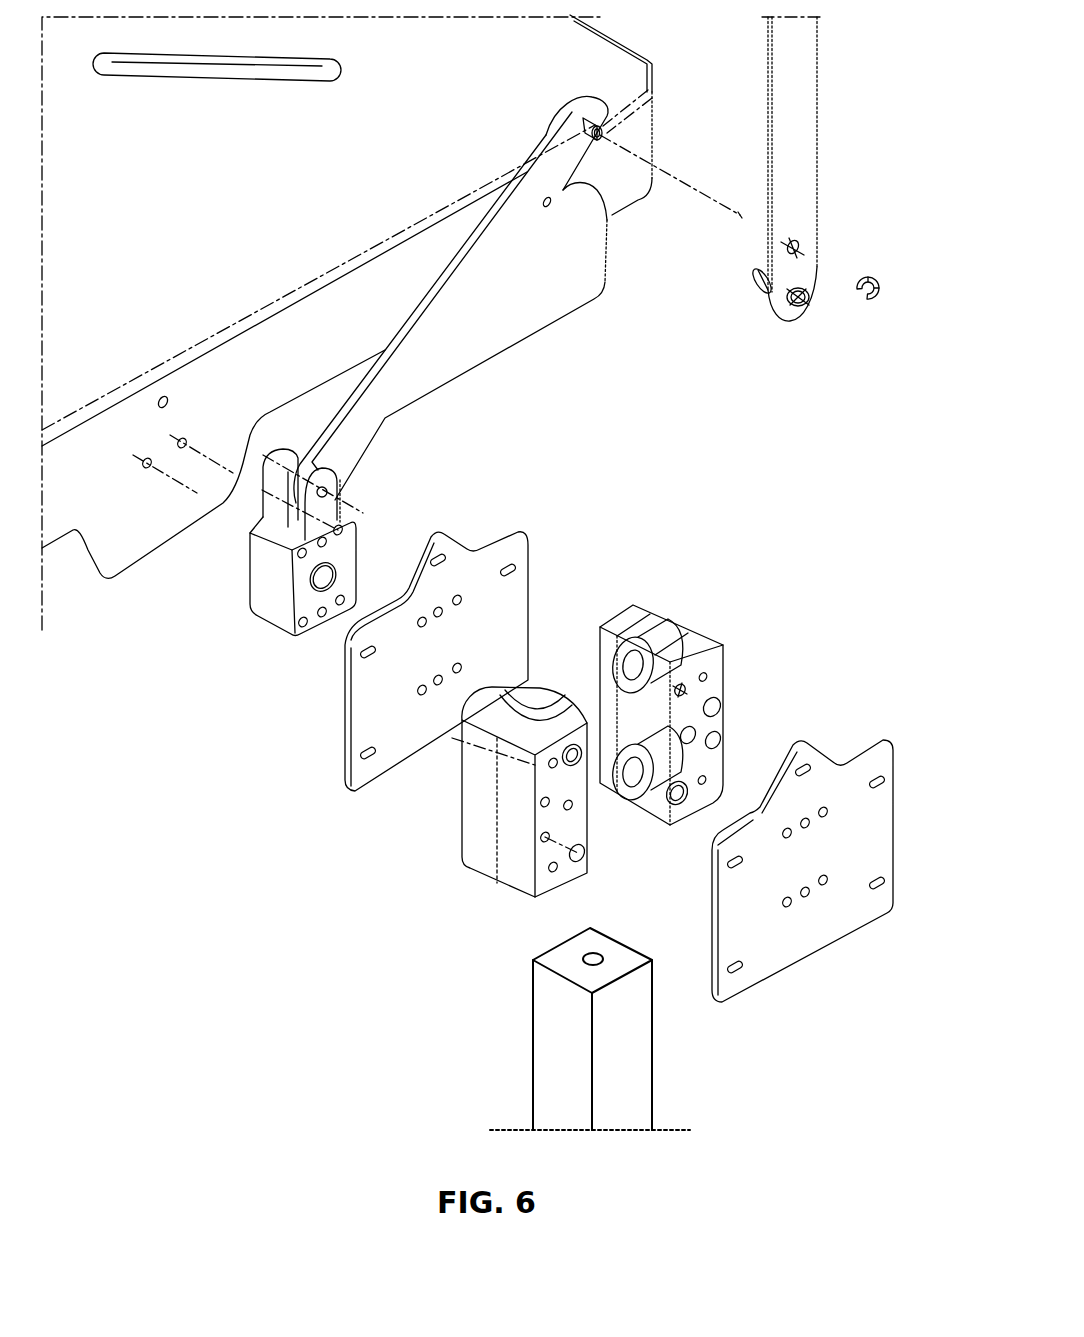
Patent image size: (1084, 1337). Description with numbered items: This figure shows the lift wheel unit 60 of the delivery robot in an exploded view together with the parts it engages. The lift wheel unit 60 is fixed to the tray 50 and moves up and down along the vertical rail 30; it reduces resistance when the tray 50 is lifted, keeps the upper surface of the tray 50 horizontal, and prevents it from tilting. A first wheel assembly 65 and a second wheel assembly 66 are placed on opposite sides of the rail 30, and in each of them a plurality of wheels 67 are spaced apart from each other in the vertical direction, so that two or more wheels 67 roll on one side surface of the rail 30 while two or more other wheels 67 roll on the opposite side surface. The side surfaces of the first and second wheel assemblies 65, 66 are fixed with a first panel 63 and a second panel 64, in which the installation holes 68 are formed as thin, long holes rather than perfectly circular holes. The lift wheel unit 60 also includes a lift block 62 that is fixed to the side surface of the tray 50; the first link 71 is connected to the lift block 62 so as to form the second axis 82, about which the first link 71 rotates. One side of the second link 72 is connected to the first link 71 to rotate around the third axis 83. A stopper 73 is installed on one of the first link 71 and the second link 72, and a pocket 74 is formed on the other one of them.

The rail 30 is at (528, 1047).
The tray 50 is at (595, 58).
The lift wheel unit 60 is at (316, 998).
The lift block 62 is at (273, 603).
The first panel 63 is at (348, 710).
The second panel 64 is at (807, 958).
The first wheel assembly 65 is at (483, 817).
The second wheel assembly 66 is at (720, 683).
The wheels 67 is at (640, 605).
The installation holes 68 is at (514, 572).
The first link 71 is at (468, 350).
The second link 72 is at (805, 112).
The stopper 73 is at (762, 291).
The pocket 74 is at (610, 200).
The second axis 82 is at (358, 512).
The third axis 83 is at (740, 217).